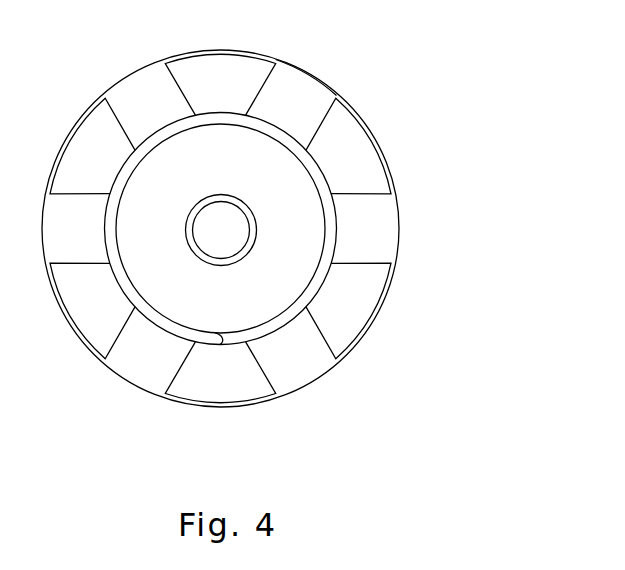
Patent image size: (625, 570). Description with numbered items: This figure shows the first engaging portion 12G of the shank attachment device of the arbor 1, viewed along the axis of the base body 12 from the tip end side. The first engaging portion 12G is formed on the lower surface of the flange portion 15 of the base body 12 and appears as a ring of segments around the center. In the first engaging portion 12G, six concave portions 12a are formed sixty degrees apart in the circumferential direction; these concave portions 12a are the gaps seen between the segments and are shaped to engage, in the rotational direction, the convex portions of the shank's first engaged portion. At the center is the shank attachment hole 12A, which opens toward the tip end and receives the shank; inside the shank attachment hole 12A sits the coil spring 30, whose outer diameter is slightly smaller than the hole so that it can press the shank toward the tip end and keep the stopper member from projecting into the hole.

The arbor 1 is at (299, 227).
The base body 12 is at (299, 211).
The concave portion 12a is at (297, 103).
The shank attachment hole 12A is at (310, 232).
The first engaging portion 12G is at (303, 229).
The flange portion 15 is at (360, 150).
The coil spring 30 is at (273, 328).